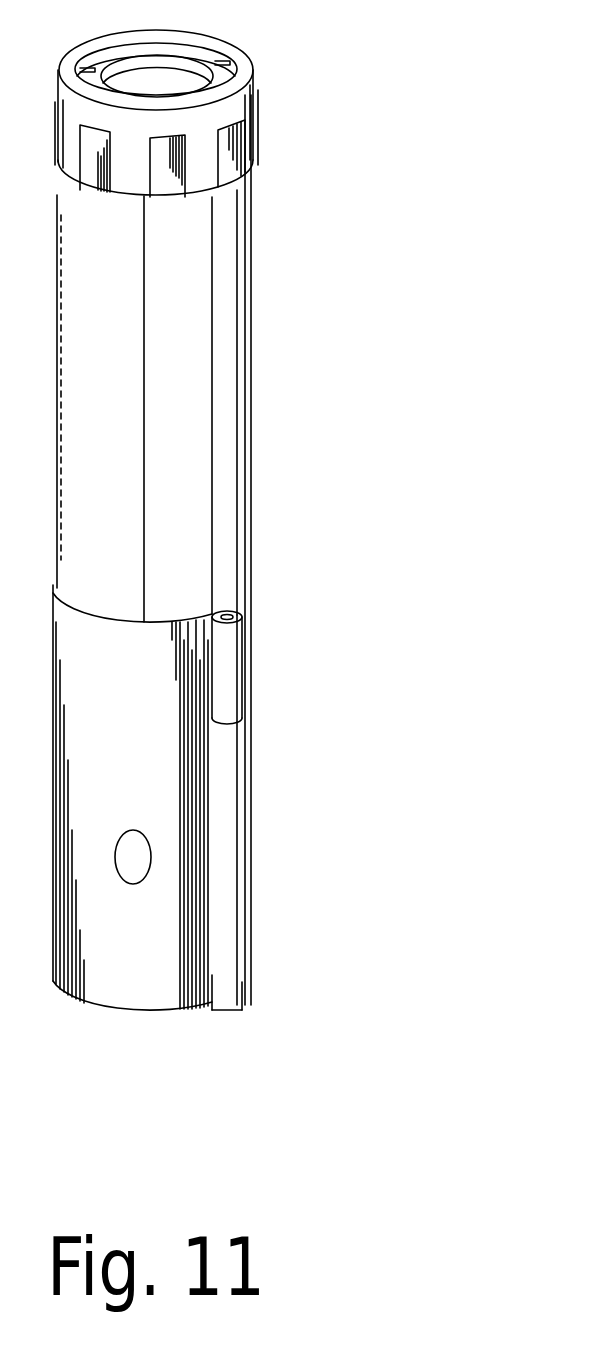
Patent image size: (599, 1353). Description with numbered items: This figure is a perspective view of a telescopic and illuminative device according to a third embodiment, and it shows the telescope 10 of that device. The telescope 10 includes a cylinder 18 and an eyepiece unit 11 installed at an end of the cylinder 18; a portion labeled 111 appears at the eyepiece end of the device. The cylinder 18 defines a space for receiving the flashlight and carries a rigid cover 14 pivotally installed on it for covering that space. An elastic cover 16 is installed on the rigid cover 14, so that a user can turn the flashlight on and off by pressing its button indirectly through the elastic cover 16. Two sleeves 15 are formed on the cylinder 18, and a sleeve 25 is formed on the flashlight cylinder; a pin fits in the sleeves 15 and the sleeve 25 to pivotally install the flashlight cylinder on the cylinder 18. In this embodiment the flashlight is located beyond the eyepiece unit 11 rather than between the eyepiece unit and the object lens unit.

The telescope 10 is at (285, 463).
The eyepiece unit 11 is at (283, 38).
The cap rim portion 111 is at (253, 104).
The cylinder 18 is at (200, 270).
The rigid cover 14 is at (137, 915).
The sleeves 15 is at (230, 656).
The elastic cover 16 is at (136, 855).
The sleeve 25 is at (232, 788).